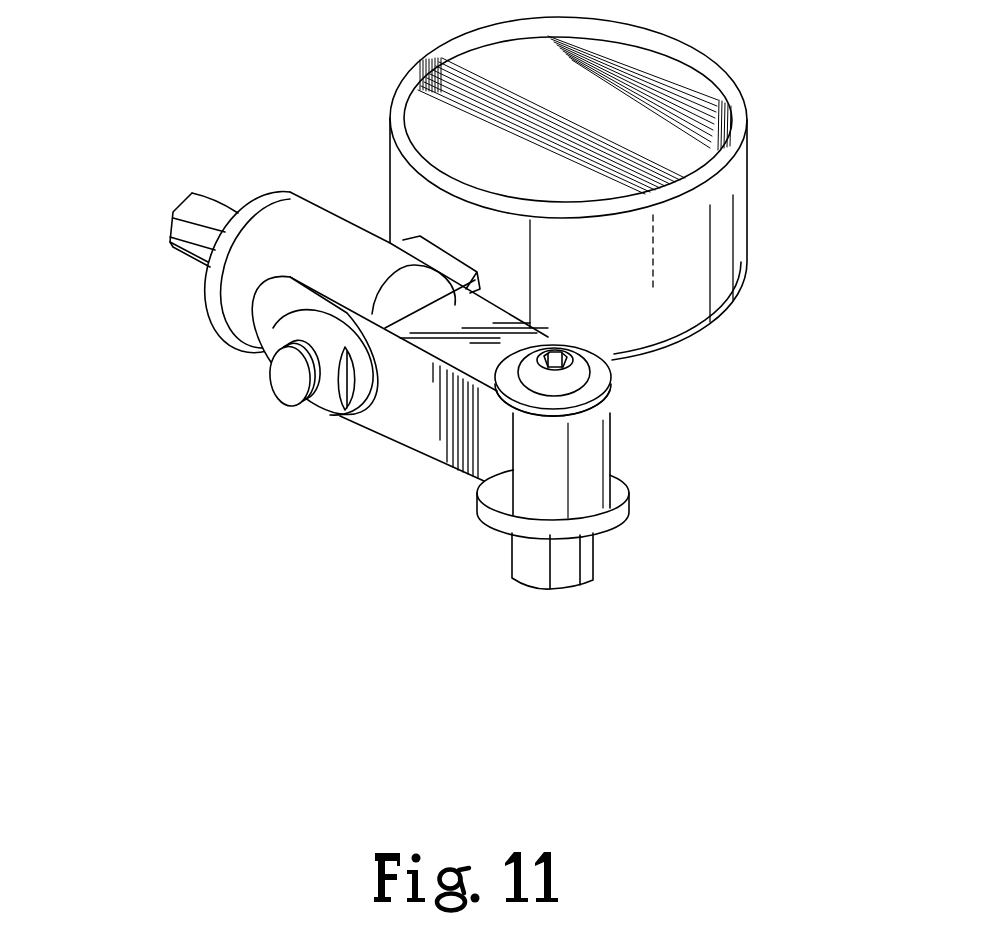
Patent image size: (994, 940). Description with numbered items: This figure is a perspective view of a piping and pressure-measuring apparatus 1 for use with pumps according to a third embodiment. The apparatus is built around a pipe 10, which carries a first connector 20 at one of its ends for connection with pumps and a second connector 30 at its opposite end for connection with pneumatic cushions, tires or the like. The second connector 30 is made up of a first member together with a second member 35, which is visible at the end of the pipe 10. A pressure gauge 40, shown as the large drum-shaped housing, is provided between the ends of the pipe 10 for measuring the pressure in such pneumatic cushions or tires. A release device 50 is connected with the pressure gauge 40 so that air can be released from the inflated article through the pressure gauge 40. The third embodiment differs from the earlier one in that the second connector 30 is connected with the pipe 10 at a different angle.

The piping and pressure-measuring apparatus 1 is at (130, 452).
The pipe 10 is at (403, 458).
The first connector 20 is at (170, 188).
The second connector 30 is at (650, 529).
The second member 35 is at (607, 394).
The pressure gauge 40 is at (736, 43).
The release device 50 is at (276, 425).